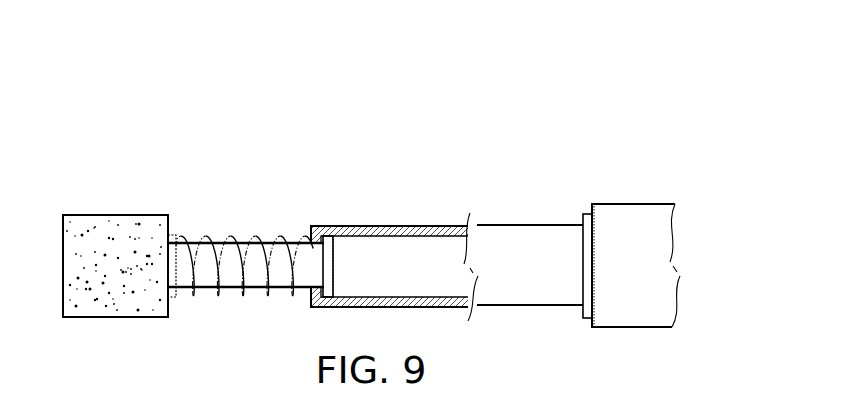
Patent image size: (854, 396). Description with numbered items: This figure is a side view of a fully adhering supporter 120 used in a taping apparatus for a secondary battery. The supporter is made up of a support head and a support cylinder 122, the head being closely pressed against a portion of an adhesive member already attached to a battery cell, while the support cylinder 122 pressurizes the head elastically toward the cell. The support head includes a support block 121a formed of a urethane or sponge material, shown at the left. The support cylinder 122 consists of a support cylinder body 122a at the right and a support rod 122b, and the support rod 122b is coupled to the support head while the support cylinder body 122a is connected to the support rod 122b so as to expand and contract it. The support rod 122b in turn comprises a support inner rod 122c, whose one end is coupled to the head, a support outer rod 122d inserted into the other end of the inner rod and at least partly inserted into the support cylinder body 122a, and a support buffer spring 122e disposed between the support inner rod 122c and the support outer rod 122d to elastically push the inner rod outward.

The fully adhering supporter 120 is at (405, 89).
The support block 121a is at (131, 228).
The support cylinder 122 is at (510, 123).
The support cylinder body 122a is at (631, 216).
The support rod 122b is at (206, 161).
The support inner rod 122c is at (219, 232).
The support outer rod 122d is at (355, 228).
The support buffer spring 122e is at (262, 226).